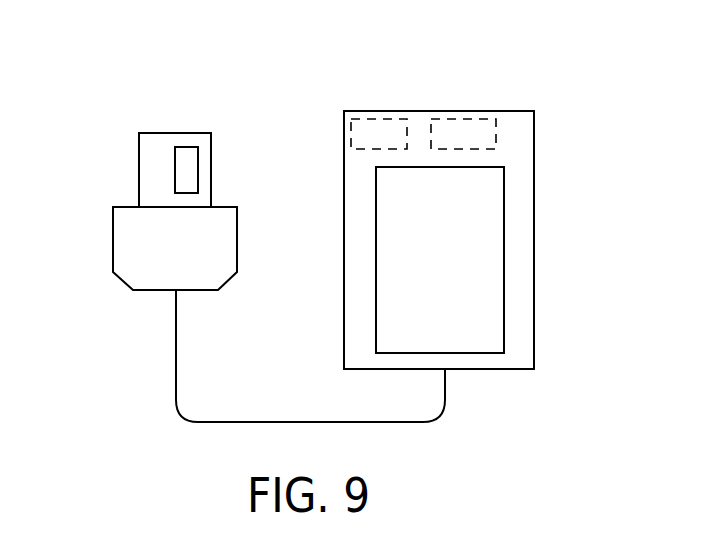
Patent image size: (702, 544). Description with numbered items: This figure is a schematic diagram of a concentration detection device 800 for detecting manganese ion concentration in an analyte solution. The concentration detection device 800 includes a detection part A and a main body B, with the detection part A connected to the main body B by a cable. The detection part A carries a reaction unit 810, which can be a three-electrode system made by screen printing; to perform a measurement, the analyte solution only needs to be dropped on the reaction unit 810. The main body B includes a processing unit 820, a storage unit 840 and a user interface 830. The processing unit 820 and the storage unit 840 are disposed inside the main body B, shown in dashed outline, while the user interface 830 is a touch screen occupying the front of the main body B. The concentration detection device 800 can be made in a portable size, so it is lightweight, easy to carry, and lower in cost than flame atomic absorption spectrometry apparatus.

The concentration detection device 800 is at (92, 42).
The detection part A is at (139, 183).
The reaction unit 810 is at (175, 172).
The main body B is at (498, 110).
The processing unit 820 is at (371, 118).
The user interface 830 is at (488, 300).
The storage unit 840 is at (455, 120).